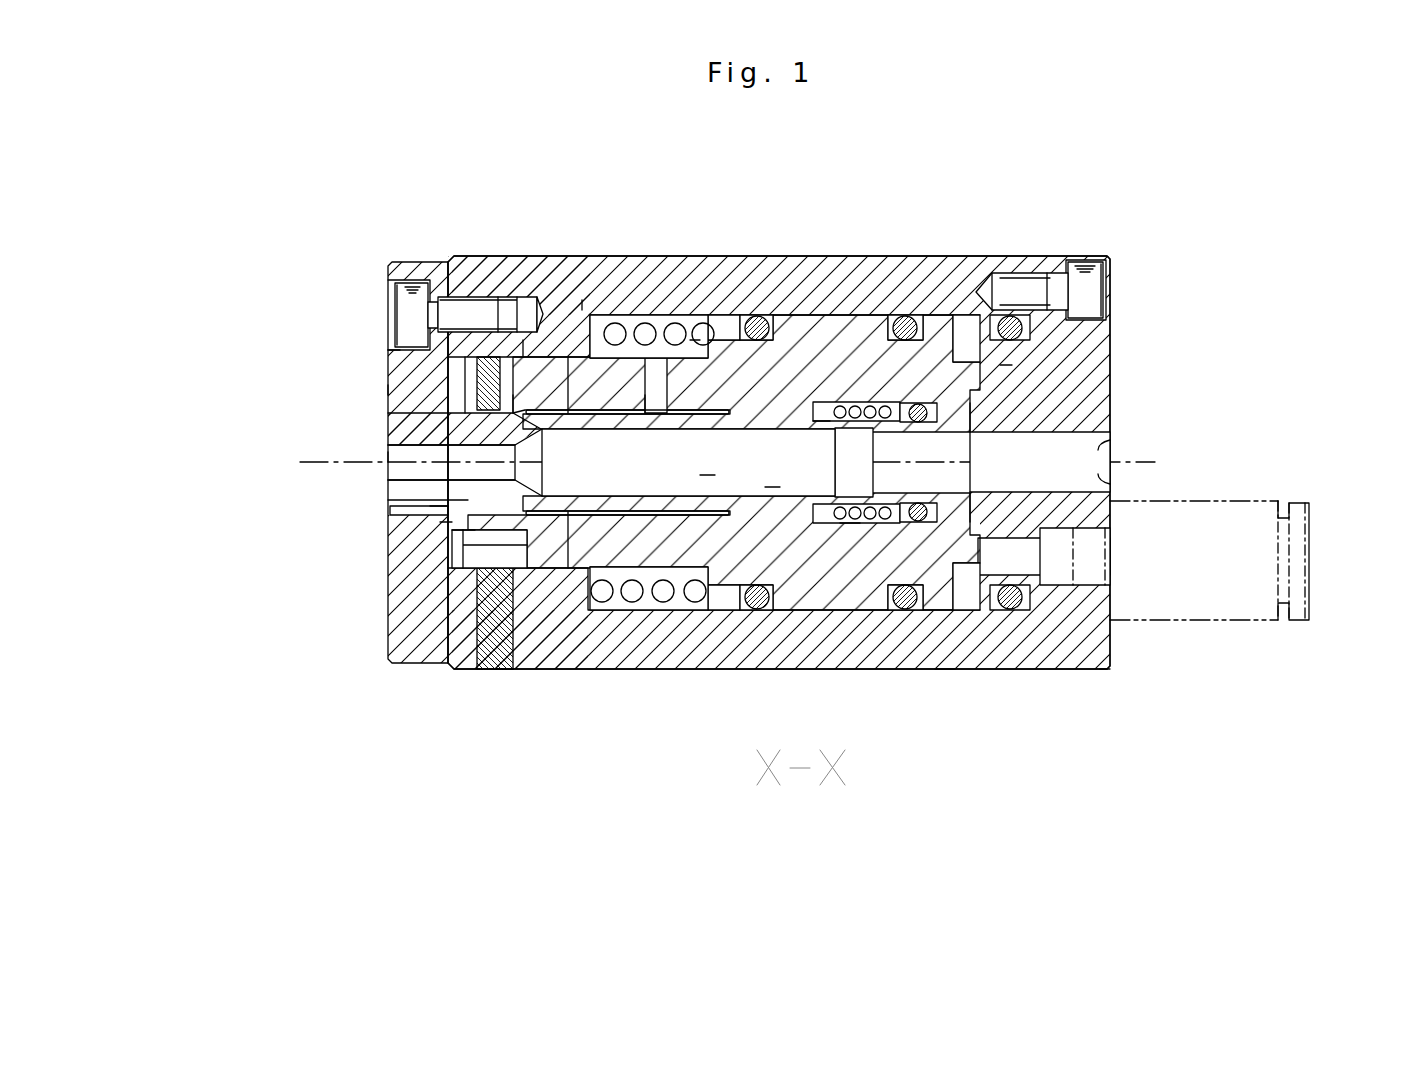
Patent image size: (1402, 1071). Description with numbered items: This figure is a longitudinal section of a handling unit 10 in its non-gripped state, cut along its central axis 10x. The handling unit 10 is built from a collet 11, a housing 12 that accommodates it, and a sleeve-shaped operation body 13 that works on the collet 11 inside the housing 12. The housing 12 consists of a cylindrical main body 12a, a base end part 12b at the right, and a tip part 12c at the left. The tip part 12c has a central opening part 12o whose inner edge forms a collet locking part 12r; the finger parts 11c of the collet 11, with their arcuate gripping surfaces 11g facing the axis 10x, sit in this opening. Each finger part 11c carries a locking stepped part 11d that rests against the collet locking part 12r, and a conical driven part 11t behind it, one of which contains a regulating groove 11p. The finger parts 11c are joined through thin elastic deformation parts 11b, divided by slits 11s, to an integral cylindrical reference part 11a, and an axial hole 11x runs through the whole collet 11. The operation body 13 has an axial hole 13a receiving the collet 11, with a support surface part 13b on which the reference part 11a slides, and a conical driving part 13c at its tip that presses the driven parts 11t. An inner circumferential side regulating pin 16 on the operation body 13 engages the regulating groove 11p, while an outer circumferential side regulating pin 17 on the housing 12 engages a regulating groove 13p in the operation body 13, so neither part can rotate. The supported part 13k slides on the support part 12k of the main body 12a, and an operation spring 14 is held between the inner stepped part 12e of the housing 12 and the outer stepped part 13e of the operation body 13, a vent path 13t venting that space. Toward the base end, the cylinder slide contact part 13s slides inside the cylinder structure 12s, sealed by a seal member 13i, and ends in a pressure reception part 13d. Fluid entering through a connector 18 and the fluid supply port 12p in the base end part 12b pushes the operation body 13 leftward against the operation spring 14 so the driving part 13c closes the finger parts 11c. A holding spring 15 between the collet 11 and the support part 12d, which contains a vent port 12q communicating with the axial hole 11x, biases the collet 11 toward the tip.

The handling unit 10 is at (337, 132).
The axis 10x is at (320, 462).
The collet 11 is at (545, 410).
The reference part 11a is at (810, 420).
The elastic deformation parts 11b is at (623, 413).
The finger parts 11c is at (392, 388).
The locking stepped part 11d is at (448, 522).
The gripping surfaces 11g is at (388, 458).
The regulating groove 11p is at (395, 357).
The slits 11s is at (463, 528).
The driven parts 11t is at (452, 530).
The axial hole 11x is at (708, 475).
The housing 12 is at (532, 670).
The main body 12a is at (945, 670).
The base end part 12b is at (1073, 670).
The tip part 12c is at (386, 630).
The support part 12d is at (953, 503).
The inner stepped part 12e is at (582, 305).
The support part 12k is at (523, 345).
The opening part 12o is at (440, 510).
The fluid supply port 12p is at (1091, 542).
The vent port 12q is at (1100, 445).
The collet locking part 12r is at (468, 533).
The cylinder structure 12s is at (965, 300).
The operation body 13 is at (823, 400).
The axial hole 13a is at (773, 487).
The support surface part 13b is at (838, 405).
The driving part 13c is at (388, 461).
The pressure reception part 13d is at (1005, 365).
The outer stepped part 13e is at (745, 340).
The seal member 13i is at (917, 405).
The supported part 13k is at (518, 400).
The regulating groove 13p is at (503, 670).
The cylinder slide contact part 13s is at (875, 418).
The vent path 13t is at (690, 340).
The operation spring 14 is at (640, 597).
The holding spring 15 is at (850, 527).
The inner circumferential side regulating pin 16 is at (482, 350).
The outer circumferential side regulating pin 17 is at (493, 672).
The connector 18 is at (1192, 625).